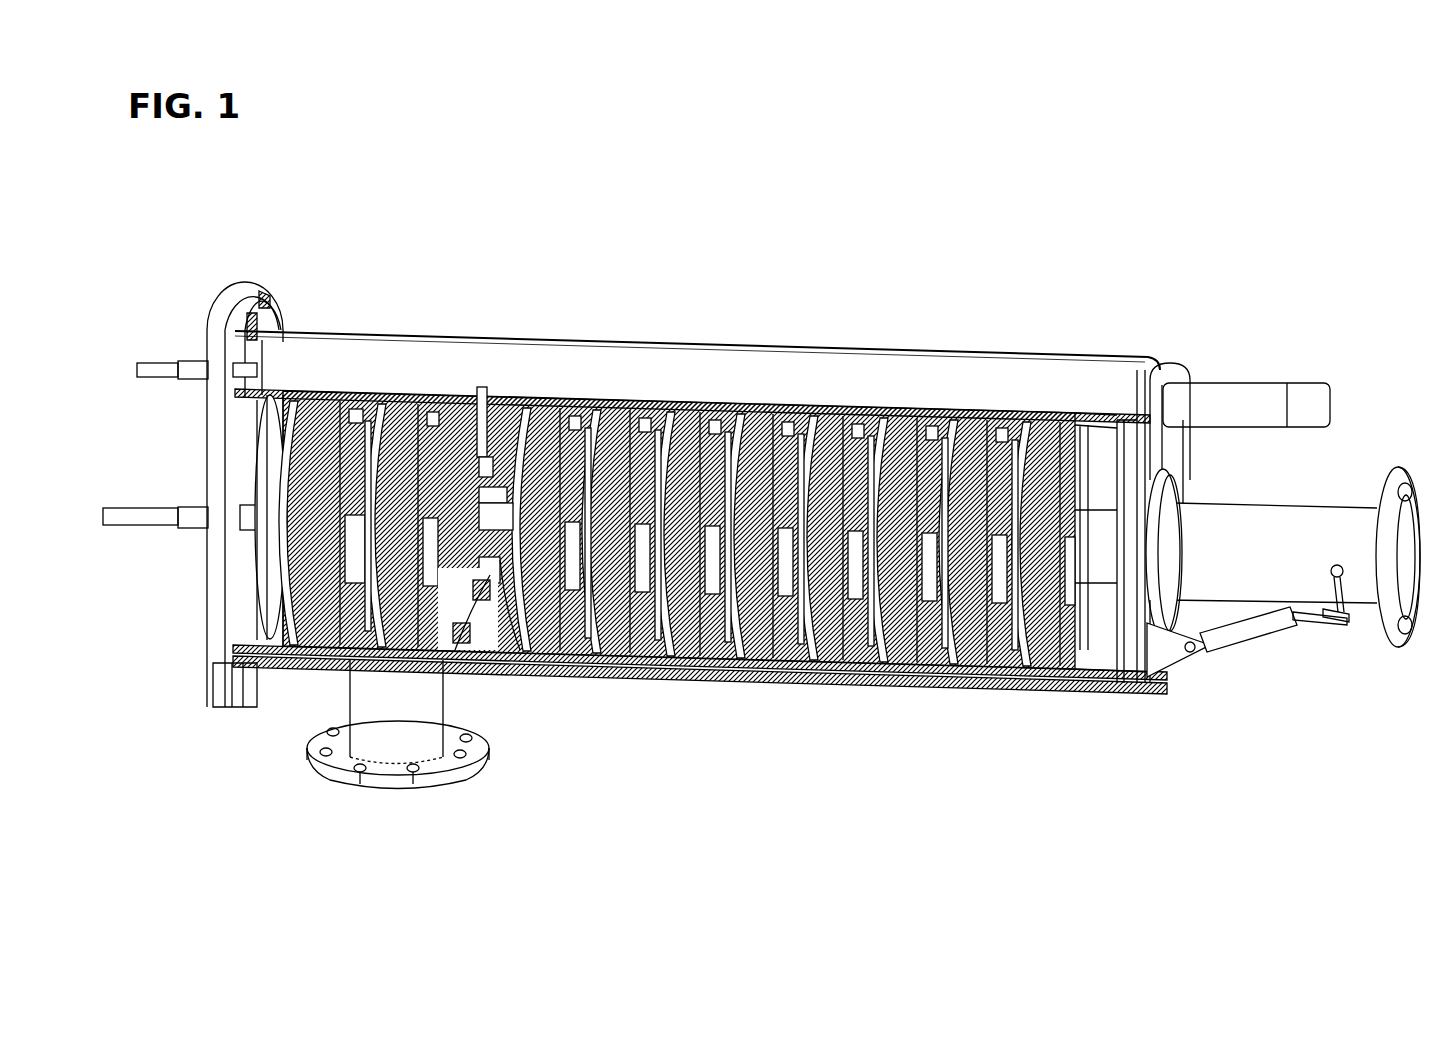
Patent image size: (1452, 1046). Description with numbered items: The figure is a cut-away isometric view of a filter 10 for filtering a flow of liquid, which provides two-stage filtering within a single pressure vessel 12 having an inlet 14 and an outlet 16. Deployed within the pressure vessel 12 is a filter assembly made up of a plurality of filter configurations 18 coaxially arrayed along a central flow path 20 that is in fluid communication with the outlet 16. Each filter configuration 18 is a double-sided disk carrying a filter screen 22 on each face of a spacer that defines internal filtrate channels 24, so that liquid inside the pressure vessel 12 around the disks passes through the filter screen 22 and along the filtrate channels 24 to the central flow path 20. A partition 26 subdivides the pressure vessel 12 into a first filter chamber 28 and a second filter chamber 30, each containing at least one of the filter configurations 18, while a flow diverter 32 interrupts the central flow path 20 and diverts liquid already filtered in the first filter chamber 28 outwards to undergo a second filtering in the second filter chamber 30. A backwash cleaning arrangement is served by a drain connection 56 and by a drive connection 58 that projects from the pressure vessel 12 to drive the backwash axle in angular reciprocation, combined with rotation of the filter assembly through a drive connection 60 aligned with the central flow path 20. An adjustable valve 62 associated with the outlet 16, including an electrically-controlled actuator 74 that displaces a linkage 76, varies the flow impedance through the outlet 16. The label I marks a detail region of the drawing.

The filter 10 is at (790, 158).
The pressure vessel 12 is at (1147, 366).
The inlet 14 is at (373, 777).
The outlet 16 is at (1400, 630).
The filter configurations 18 is at (287, 643).
The central flow path 20 is at (801, 620).
The filter screen 22 is at (857, 630).
The filtrate channels 24 is at (740, 663).
The partition 26 is at (470, 655).
The first filter chamber 28 is at (473, 333).
The second filter chamber 30 is at (487, 330).
The flow diverter 32 is at (547, 660).
The drain connection 56 is at (1300, 396).
The drive connection 58 is at (157, 378).
The drive connection 60 is at (133, 527).
The adjustable valve 62 is at (1248, 683).
The electrically-controlled actuator 74 is at (1262, 640).
The linkage 76 is at (1333, 622).
The detail reference I is at (602, 362).